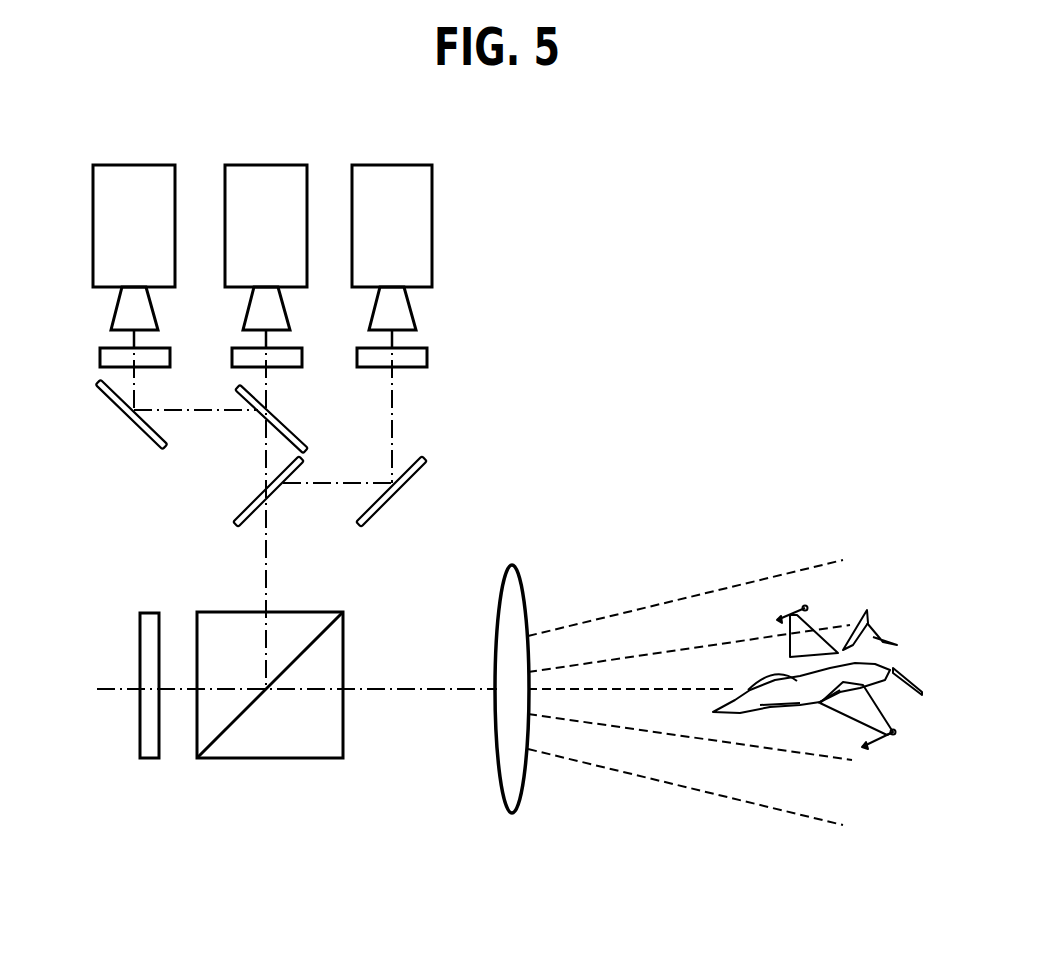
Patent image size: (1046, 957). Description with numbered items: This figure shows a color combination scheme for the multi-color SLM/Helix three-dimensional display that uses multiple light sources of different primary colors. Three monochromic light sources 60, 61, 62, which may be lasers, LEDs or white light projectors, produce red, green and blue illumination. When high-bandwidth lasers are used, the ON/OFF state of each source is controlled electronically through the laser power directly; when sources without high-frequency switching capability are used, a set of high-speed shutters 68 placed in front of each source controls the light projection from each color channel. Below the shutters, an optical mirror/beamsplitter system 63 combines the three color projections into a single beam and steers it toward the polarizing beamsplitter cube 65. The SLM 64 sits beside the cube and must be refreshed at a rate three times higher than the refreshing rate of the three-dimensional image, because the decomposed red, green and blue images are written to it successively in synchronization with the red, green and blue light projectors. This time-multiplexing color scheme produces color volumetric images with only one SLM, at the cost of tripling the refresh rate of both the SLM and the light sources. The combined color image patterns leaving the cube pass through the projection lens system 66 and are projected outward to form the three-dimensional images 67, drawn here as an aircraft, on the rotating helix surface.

The first light source 60 is at (134, 165).
The second light source 61 is at (266, 165).
The third light source 62 is at (390, 165).
The optical mirror/beamsplitter system 63 is at (260, 419).
The SLM 64 is at (140, 641).
The polarizing beamsplitter cube 65 is at (263, 760).
The projection lens system 66 is at (512, 814).
The 3D images 67 is at (800, 705).
The high-speed shutters 68 is at (100, 351).